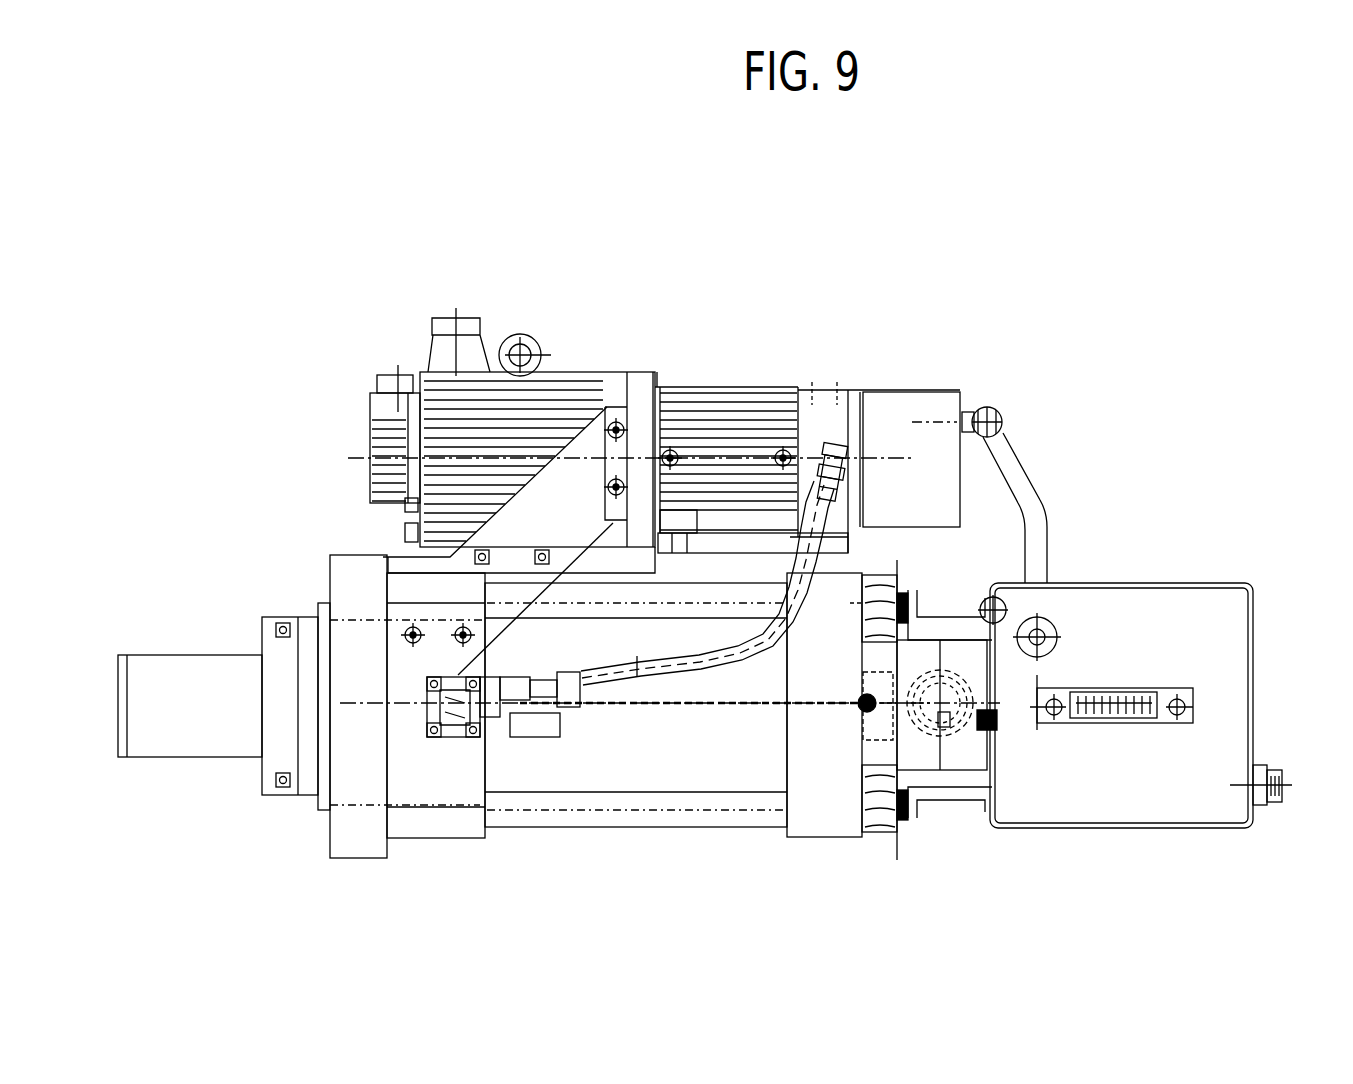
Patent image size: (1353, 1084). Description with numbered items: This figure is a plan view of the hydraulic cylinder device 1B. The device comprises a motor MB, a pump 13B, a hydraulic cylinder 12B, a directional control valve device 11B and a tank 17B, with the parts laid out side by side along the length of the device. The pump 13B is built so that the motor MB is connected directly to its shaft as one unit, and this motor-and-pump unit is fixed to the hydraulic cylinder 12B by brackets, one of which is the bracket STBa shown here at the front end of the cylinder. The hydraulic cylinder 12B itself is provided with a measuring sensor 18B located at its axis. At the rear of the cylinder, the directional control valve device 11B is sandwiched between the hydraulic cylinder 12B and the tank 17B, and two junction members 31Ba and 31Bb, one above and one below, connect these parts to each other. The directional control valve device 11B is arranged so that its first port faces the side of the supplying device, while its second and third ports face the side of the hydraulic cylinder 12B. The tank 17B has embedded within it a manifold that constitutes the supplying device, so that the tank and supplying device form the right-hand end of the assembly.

The hydraulic cylinder device 1B is at (690, 248).
The pump 13B is at (720, 415).
The motor MB is at (540, 428).
The bracket STBa is at (410, 598).
The hydraulic cylinder 12B is at (550, 768).
The measuring sensor 18B is at (707, 718).
The directional control valve device 11B is at (907, 748).
The junction member 31Ba is at (947, 617).
The junction member 31Bb is at (947, 800).
The tank 17B is at (1177, 803).